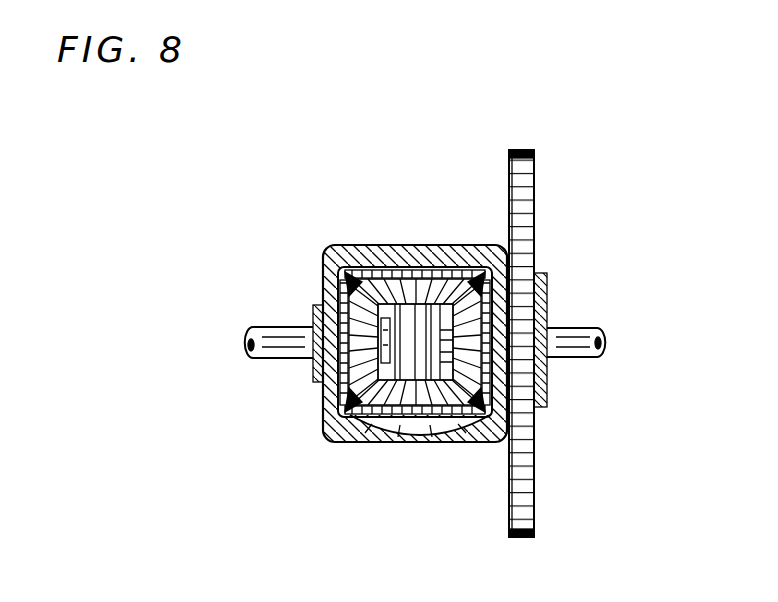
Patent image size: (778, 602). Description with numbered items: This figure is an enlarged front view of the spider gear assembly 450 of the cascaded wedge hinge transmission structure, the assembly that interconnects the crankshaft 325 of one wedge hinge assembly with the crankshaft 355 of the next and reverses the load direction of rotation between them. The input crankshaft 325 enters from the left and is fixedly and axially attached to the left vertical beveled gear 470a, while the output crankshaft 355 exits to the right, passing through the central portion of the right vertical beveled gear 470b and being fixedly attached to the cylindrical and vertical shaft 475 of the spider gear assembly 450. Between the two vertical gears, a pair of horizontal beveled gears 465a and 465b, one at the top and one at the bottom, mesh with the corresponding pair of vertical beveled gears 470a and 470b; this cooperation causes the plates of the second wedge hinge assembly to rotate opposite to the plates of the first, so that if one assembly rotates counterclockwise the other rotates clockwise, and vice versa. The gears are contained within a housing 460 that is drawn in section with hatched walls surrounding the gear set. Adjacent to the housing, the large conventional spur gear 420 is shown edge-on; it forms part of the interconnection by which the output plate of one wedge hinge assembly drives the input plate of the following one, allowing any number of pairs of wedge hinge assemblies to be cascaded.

The spider gear assembly 450 is at (326, 211).
The motor housing 460 is at (322, 253).
The horizontal beveled gear 465a is at (408, 281).
The horizontal beveled gear 465b is at (413, 423).
The left vertical beveled gear 470a is at (322, 301).
The right vertical beveled gear 470b is at (472, 269).
The cylindrical and vertical shaft 475 is at (336, 381).
The crankshaft 325 is at (247, 333).
The crankshaft 355 is at (588, 328).
The spur gear 420 is at (536, 194).